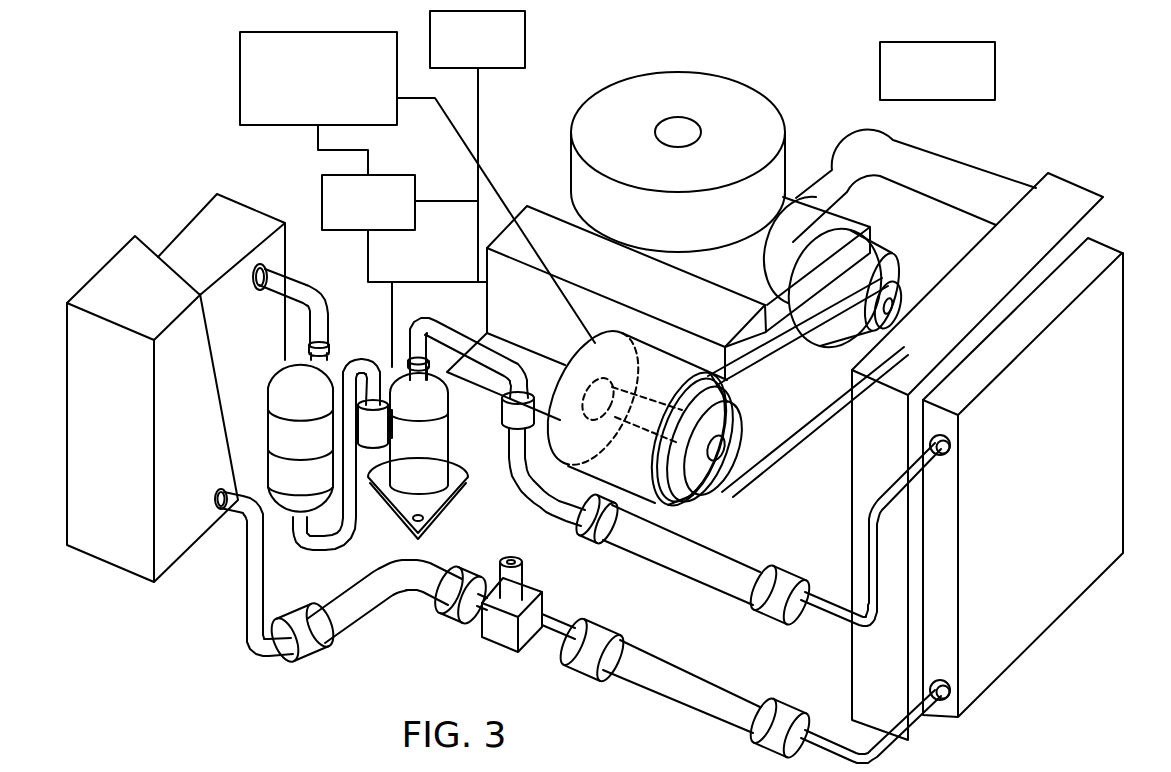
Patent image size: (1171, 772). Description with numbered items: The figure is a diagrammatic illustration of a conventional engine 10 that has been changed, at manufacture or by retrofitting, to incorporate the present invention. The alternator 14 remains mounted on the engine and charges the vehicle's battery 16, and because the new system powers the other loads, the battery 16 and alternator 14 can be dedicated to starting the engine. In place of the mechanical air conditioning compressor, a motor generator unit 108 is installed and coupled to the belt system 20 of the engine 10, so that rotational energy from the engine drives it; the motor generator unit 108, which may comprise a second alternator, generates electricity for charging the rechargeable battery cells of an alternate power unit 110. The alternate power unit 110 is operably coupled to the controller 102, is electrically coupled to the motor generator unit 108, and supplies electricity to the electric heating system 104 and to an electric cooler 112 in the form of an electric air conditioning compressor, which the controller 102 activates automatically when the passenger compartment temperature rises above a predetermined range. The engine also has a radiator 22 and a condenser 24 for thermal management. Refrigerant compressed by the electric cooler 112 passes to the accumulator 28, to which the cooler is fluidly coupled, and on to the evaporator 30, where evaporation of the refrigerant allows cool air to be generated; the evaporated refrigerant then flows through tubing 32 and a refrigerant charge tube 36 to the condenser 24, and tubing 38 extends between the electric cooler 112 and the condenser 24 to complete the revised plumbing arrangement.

The engine 10 is at (552, 195).
The alternator 14 is at (876, 250).
The battery 16 is at (843, 248).
The belt system 20 is at (784, 408).
The radiator 22 is at (1073, 193).
The condenser 24 is at (1117, 298).
The accumulator 28 is at (278, 388).
The evaporator 30 is at (106, 281).
The tubing 32 is at (671, 688).
The refrigerant charge tube 36 is at (498, 642).
The tubing 38 is at (684, 558).
The controller 102 is at (349, 215).
The electric heating system 104 is at (459, 53).
The motor generator unit 108 is at (640, 483).
The alternate power unit 110 is at (300, 91).
The electric cooler 112 is at (440, 437).